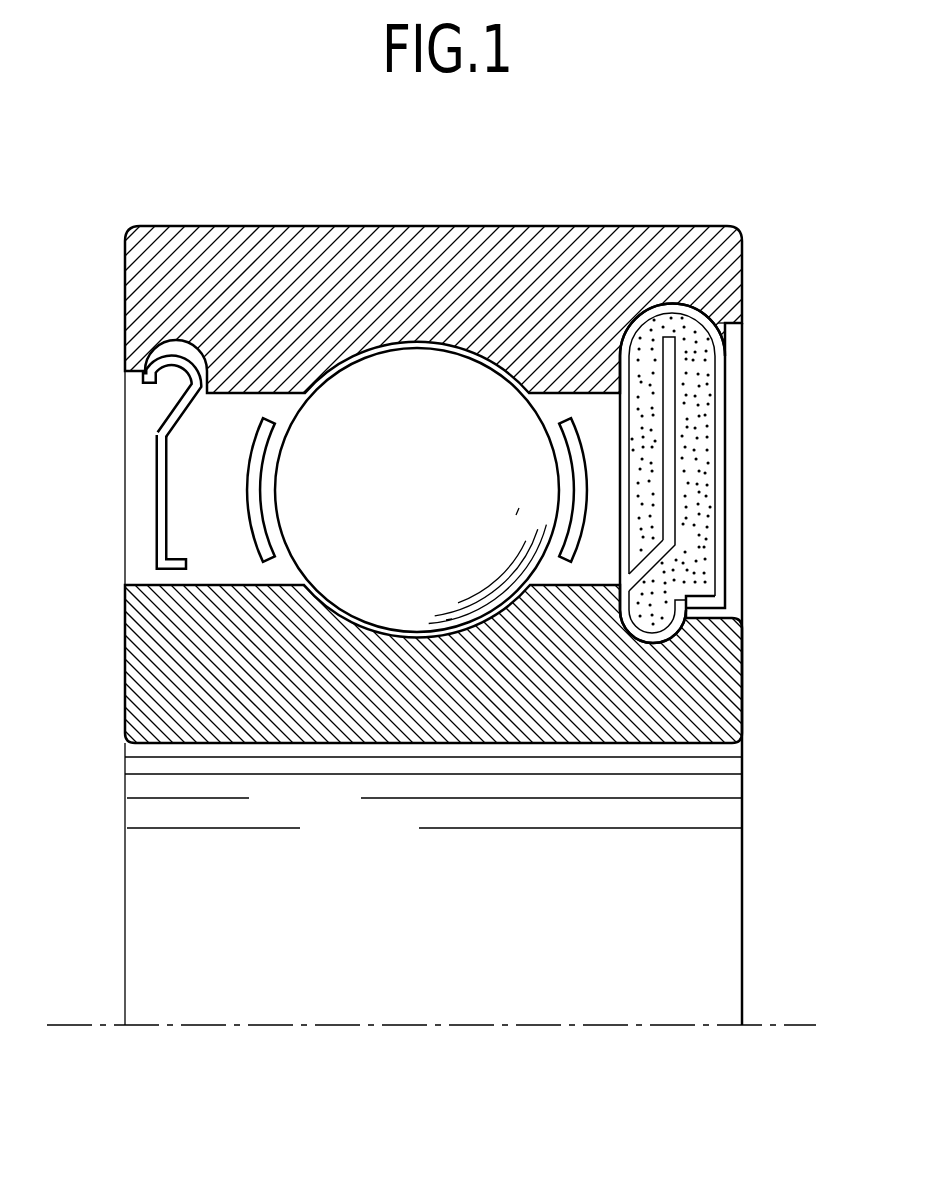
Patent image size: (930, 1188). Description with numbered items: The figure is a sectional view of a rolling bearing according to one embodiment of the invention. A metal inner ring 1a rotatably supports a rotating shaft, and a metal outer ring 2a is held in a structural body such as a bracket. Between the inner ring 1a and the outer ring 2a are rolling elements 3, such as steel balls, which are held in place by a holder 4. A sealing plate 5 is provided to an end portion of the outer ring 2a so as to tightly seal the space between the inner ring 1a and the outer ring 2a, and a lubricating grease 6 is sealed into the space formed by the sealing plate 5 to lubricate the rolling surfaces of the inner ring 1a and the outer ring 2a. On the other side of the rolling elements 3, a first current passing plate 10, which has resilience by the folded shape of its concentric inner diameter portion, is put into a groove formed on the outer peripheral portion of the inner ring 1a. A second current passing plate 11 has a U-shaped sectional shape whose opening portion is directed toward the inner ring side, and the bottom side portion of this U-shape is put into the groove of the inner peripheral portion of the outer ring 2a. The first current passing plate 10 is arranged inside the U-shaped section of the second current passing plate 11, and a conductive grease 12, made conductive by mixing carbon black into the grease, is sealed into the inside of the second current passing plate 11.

The inner ring 1a is at (737, 680).
The outer ring 2a is at (608, 226).
The rolling element 3 is at (413, 350).
The holder 4 is at (255, 532).
The sealing plate 5 is at (157, 497).
The lubricating grease 6 is at (187, 455).
The first current passing plate 10 is at (665, 530).
The second current passing plate 11 is at (721, 360).
The conductive grease 12 is at (699, 458).